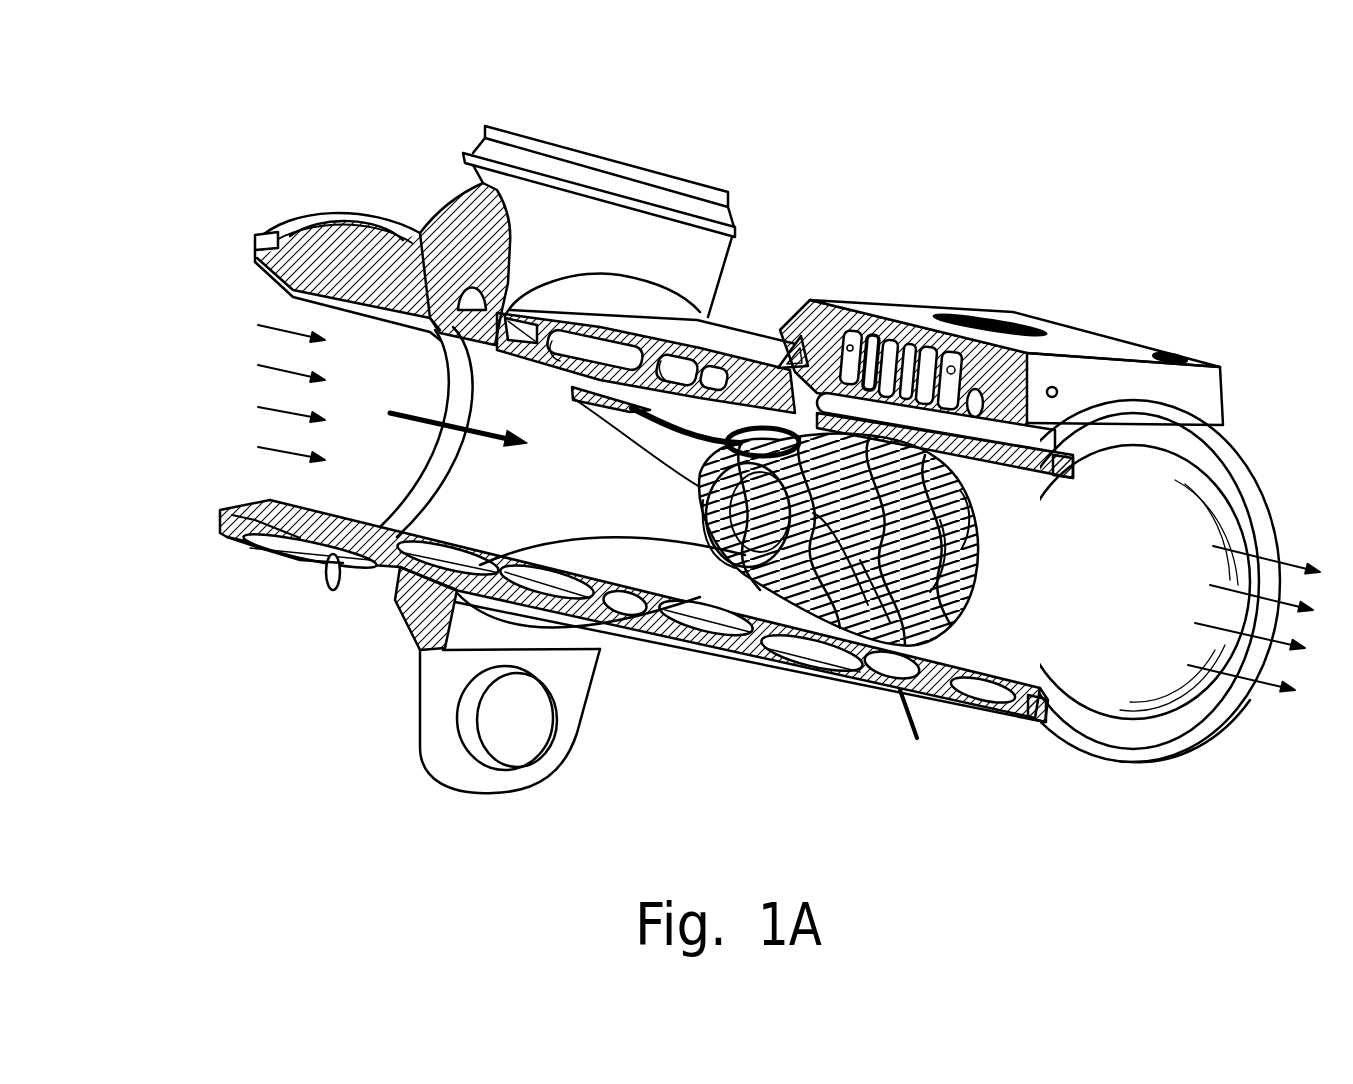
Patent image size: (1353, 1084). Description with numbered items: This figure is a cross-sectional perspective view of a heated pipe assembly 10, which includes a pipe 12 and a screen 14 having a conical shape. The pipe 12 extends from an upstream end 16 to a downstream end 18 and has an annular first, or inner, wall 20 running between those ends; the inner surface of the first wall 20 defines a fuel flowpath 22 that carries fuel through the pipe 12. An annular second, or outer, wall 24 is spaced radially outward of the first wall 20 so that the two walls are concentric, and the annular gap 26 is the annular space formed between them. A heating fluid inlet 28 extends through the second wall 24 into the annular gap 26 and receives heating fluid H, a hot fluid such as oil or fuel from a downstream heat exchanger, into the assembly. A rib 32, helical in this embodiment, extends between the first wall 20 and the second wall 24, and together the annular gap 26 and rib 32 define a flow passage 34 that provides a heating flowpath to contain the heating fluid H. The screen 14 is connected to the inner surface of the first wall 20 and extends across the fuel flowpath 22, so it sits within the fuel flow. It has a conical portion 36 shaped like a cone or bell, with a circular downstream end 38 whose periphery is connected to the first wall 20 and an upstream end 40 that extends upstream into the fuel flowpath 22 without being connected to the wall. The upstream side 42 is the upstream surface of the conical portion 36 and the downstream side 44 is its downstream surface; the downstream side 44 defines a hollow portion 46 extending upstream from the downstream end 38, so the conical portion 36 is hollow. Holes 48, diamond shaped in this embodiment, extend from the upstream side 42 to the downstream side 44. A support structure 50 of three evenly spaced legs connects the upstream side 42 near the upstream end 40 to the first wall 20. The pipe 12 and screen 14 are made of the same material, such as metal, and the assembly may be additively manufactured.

The heated pipe assembly 10 is at (266, 133).
The pipe 12 is at (805, 192).
The screen 14 is at (1036, 531).
The upstream end 16 is at (255, 252).
The downstream end 18 is at (1197, 720).
The first wall 20 is at (848, 308).
The fuel flowpath 22 is at (789, 508).
The second wall 24 is at (693, 357).
The annular gap 26 is at (792, 643).
The heating fluid inlet 28 is at (333, 580).
The rib 32 is at (757, 360).
The flow passage 34 is at (697, 627).
The conical portion 36 is at (893, 635).
The downstream end 38 is at (930, 633).
The upstream end 40 is at (695, 495).
The upstream side 42 is at (705, 520).
The downstream side 44 is at (930, 592).
The hollow portion 46 is at (962, 548).
The holes 48 is at (868, 605).
The support structure 50 is at (420, 607).
The heating fluid H is at (312, 580).